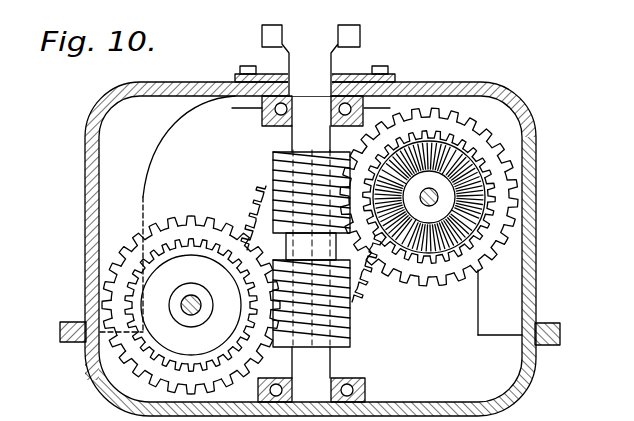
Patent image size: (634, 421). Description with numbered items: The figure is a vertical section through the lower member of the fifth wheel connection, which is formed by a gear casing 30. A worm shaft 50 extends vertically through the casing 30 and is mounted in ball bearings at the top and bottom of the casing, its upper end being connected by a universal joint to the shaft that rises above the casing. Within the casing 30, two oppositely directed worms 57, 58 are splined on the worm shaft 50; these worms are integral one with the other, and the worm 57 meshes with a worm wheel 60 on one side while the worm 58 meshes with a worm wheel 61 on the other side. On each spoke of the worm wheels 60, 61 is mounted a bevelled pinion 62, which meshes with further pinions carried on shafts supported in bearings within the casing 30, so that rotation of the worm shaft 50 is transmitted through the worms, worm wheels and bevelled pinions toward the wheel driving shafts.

The gear casing 30 is at (538, 211).
The worm shaft 50 is at (314, 368).
The worm 57 is at (274, 161).
The worm 58 is at (346, 323).
The worm wheel 60 is at (487, 130).
The worm wheel 61 is at (138, 232).
The bevelled pinion 62 is at (494, 174).